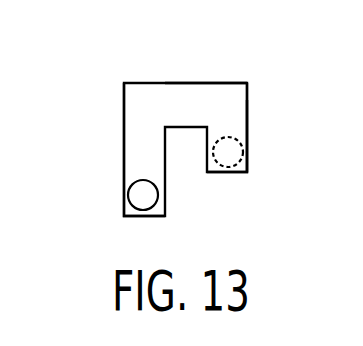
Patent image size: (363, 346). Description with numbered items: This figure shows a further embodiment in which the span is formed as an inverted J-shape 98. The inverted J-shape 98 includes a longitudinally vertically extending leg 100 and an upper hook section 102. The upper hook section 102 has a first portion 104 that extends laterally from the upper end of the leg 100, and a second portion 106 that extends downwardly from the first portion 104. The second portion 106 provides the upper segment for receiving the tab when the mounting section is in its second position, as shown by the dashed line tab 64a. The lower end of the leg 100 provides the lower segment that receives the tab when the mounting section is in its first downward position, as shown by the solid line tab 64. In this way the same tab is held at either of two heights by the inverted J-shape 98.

The inverted J-shape 98 is at (75, 79).
The leg 100 is at (135, 149).
The upper hook section 102 is at (236, 97).
The first portion 104 is at (182, 90).
The second portion 106 is at (239, 112).
The tab 64 is at (128, 198).
The tab 64a is at (243, 162).